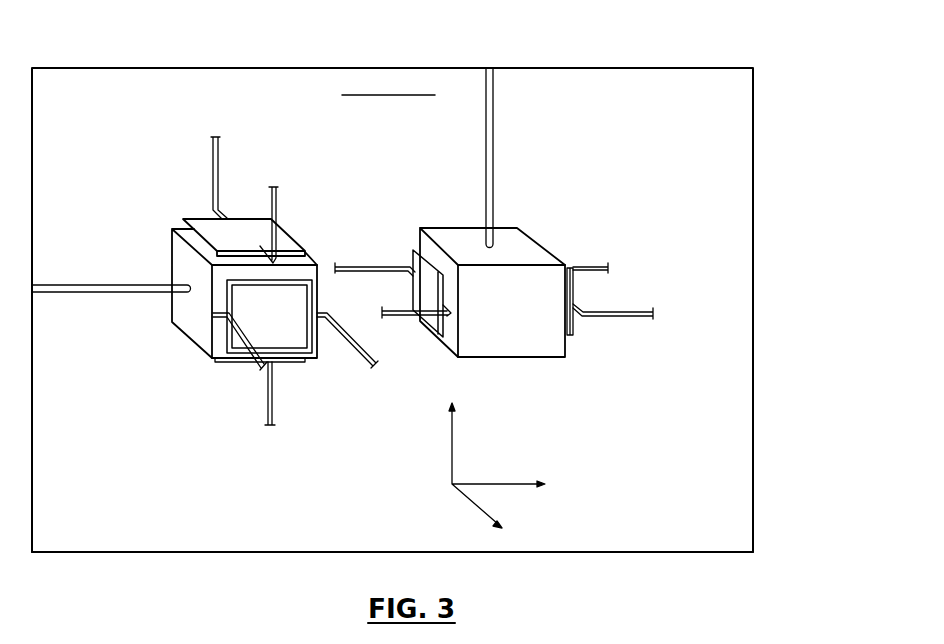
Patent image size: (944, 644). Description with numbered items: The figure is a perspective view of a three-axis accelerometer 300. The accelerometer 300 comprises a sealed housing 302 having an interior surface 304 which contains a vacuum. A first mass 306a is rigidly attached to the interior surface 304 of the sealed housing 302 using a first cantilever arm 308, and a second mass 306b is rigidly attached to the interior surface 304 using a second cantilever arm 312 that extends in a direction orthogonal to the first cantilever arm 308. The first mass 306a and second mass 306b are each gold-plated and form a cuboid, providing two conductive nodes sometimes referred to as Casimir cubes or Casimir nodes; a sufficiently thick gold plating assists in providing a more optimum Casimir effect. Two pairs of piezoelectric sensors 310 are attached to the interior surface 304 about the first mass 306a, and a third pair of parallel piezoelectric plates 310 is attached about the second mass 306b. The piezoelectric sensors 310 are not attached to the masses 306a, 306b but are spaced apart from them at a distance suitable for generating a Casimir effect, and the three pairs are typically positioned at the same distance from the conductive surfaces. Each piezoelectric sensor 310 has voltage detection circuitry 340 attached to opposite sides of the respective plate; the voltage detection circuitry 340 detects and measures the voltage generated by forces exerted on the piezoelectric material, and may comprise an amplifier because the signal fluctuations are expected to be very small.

The three-axis accelerometer 300 is at (703, 38).
The sealed housing 302 is at (755, 317).
The interior surface 304 is at (752, 387).
The first mass 306a is at (170, 252).
The second mass 306b is at (547, 255).
The first cantilever arm 308 is at (98, 284).
The piezoelectric sensor 310 is at (280, 238).
The second cantilever arm 312 is at (493, 124).
The voltage detection circuitry 340 is at (271, 197).